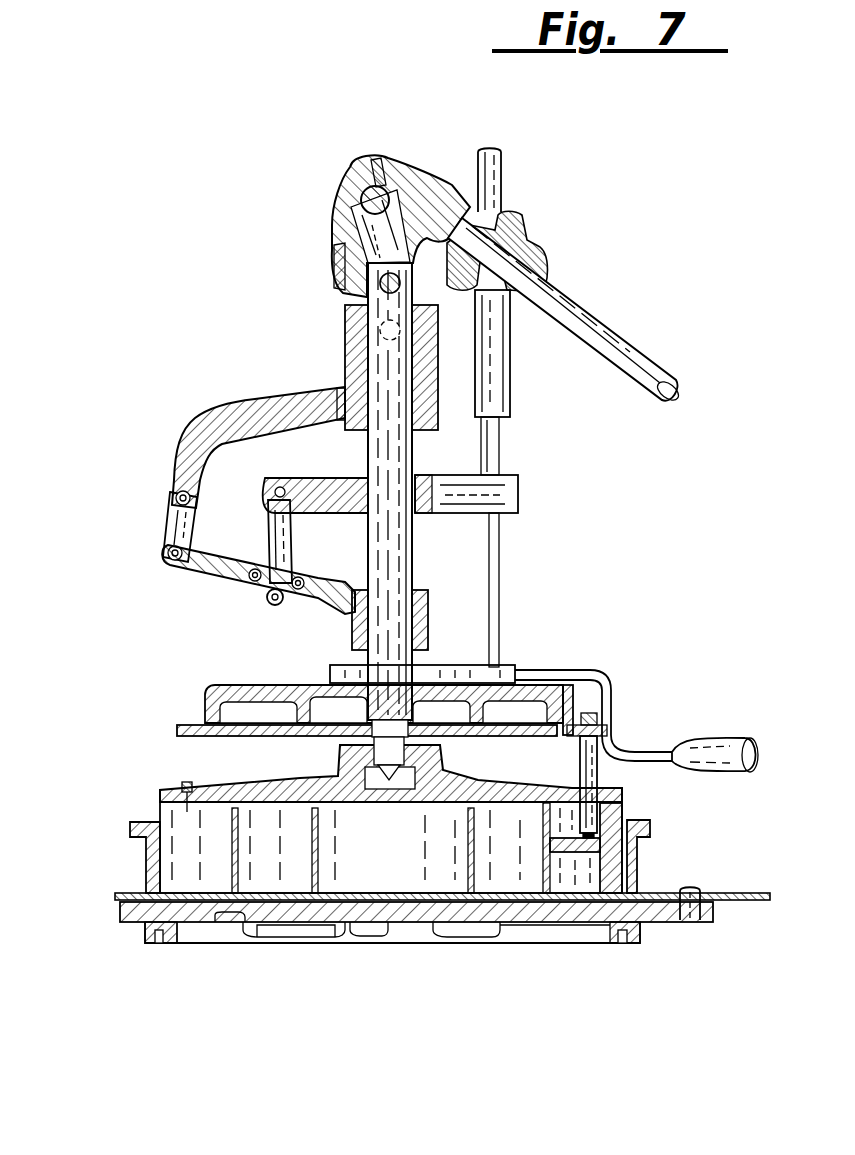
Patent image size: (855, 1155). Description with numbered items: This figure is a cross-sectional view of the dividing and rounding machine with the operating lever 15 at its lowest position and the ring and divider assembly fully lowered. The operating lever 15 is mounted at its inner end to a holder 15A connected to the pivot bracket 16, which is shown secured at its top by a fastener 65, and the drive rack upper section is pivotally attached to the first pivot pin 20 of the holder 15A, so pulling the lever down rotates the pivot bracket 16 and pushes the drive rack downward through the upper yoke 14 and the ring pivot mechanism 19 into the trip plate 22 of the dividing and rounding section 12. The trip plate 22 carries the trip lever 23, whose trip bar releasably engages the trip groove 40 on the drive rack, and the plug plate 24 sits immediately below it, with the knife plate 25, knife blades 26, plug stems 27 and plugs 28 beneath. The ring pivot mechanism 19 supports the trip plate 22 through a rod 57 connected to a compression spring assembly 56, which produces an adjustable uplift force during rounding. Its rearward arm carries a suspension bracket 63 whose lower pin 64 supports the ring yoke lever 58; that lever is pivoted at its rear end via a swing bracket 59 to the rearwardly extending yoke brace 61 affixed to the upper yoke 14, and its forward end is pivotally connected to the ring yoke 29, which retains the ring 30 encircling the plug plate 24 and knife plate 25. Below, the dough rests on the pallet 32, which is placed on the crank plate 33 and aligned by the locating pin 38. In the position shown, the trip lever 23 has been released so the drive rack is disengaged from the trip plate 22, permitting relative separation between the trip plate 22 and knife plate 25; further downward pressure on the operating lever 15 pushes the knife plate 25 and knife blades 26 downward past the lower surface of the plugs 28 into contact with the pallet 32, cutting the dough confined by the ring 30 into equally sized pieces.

The dividing and rounding section 12 is at (146, 793).
The upper yoke 14 is at (440, 366).
The operating lever 15 is at (597, 330).
The holder 15A is at (445, 207).
The pivot bracket 16 is at (338, 212).
The ring pivot mechanism 19 is at (424, 478).
The first pivot pin 20 is at (378, 285).
The trip plate 22 is at (232, 686).
The trip lever 23 is at (598, 672).
The plug plate 24 is at (184, 725).
The knife plate 25 is at (444, 757).
The knife blades 26 is at (462, 840).
The plug stems 27 is at (593, 768).
The plugs 28 is at (603, 850).
The ring yoke 29 is at (430, 608).
The ring 30 is at (640, 852).
The pallet 32 is at (642, 893).
The crank plate 33 is at (665, 923).
The locating pin 38 is at (700, 893).
The trip groove 40 is at (402, 722).
The compression spring assembly 56 is at (494, 378).
The rod 57 is at (500, 583).
The ring yoke lever 58 is at (207, 577).
The swing bracket 59 is at (170, 517).
The yoke brace 61 is at (258, 402).
The suspension bracket 63 is at (293, 540).
The lower pin 64 is at (268, 606).
The screw 65 is at (382, 165).